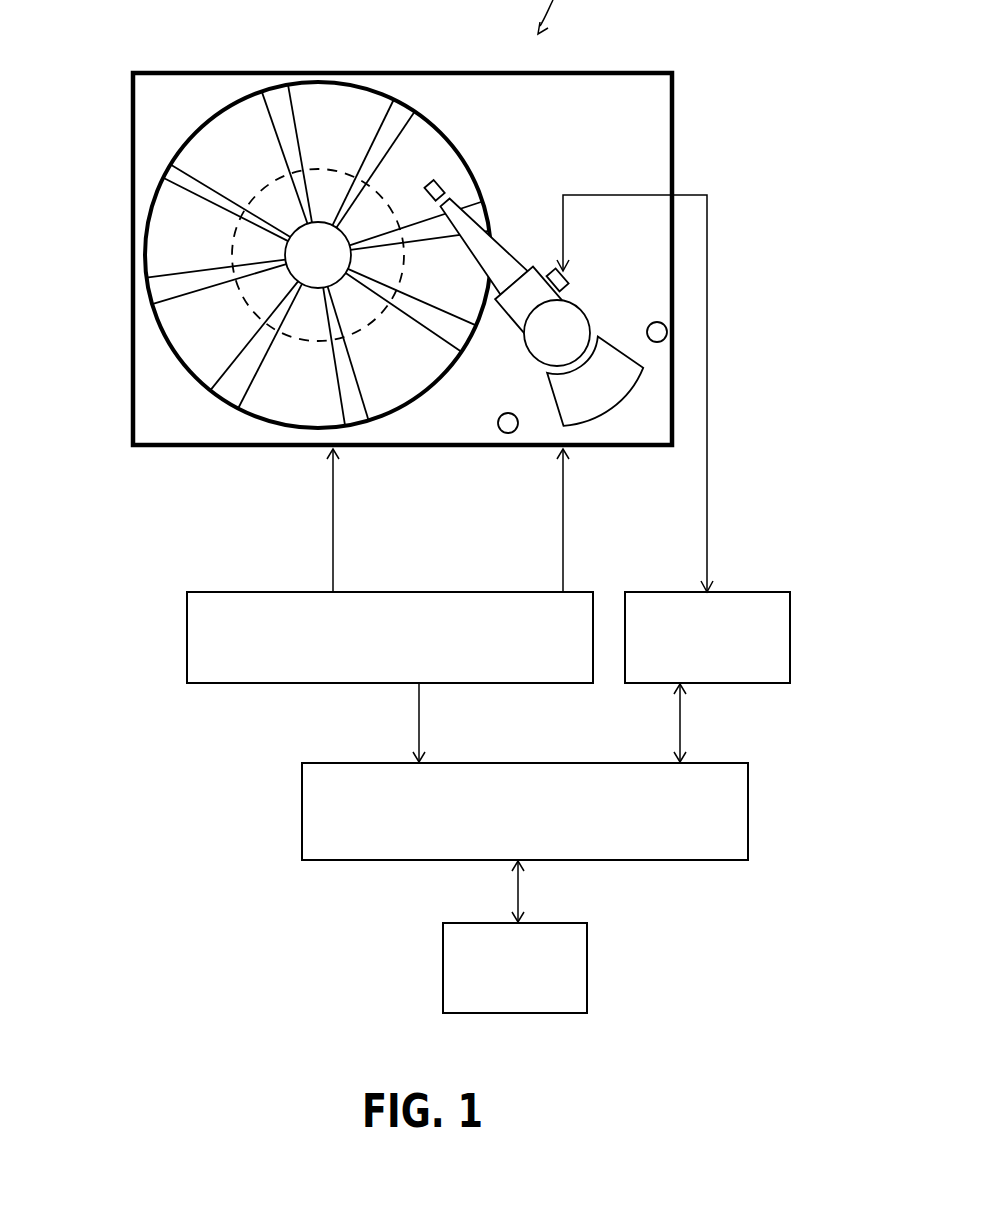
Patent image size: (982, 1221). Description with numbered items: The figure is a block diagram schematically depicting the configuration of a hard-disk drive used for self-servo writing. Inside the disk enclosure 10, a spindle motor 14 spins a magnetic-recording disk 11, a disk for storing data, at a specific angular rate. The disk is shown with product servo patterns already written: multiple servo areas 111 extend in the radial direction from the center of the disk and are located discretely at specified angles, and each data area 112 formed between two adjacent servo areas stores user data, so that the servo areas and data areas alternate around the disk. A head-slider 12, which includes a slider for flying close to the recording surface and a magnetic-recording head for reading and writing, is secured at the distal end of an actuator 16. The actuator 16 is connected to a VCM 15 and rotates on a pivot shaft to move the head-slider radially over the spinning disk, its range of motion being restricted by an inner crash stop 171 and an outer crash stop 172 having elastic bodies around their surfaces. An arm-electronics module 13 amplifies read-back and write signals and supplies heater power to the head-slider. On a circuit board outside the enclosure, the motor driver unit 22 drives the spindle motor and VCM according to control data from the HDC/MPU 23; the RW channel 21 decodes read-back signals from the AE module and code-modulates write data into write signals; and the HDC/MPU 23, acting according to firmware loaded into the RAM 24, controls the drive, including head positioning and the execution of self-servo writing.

The disk enclosure 10 is at (133, 265).
The magnetic-recording disk 11 is at (362, 88).
The servo area 111 is at (190, 183).
The data area 112 is at (273, 413).
The head-slider 12 is at (446, 186).
The arm-electronics module 13 is at (571, 285).
The spindle motor 14 is at (277, 180).
The VCM 15 is at (630, 348).
The actuator 16 is at (489, 347).
The inner crash stop 171 is at (657, 343).
The outer crash stop 172 is at (507, 433).
The read and write channel 21 is at (707, 637).
The motor driver unit 22 is at (390, 637).
The hard-disk controller/microprocessor unit 23 is at (525, 811).
The random access memory 24 is at (515, 968).